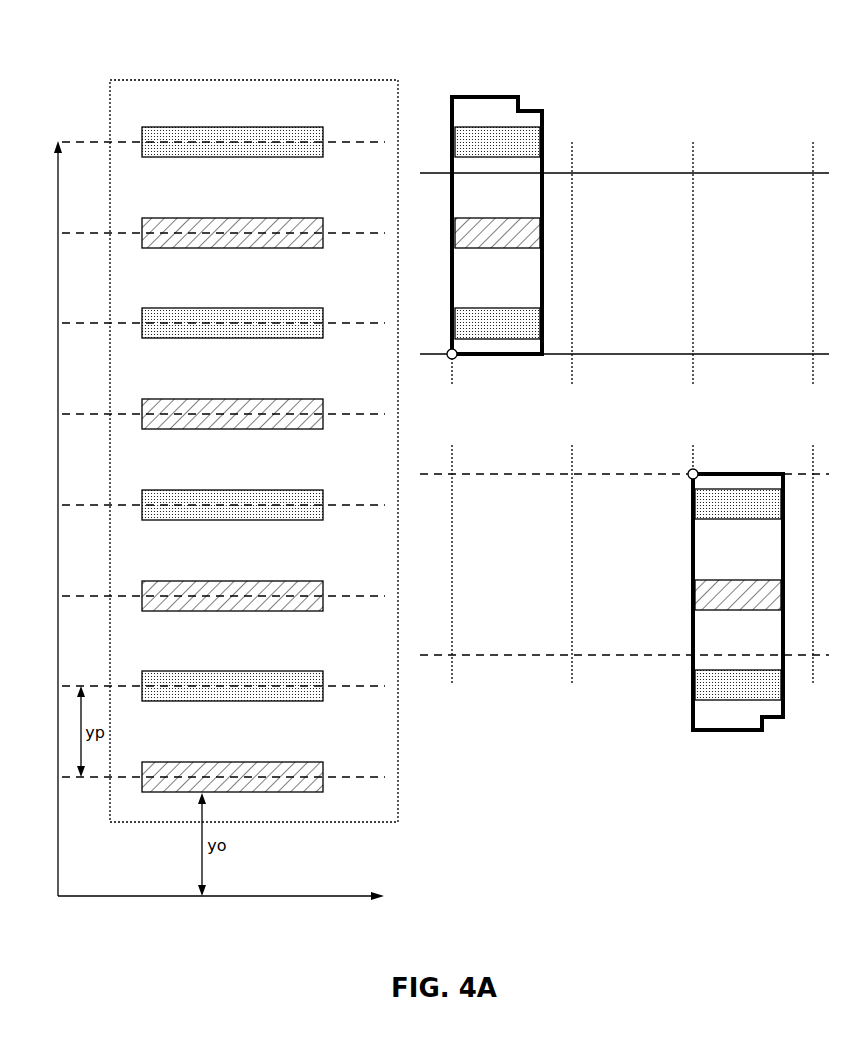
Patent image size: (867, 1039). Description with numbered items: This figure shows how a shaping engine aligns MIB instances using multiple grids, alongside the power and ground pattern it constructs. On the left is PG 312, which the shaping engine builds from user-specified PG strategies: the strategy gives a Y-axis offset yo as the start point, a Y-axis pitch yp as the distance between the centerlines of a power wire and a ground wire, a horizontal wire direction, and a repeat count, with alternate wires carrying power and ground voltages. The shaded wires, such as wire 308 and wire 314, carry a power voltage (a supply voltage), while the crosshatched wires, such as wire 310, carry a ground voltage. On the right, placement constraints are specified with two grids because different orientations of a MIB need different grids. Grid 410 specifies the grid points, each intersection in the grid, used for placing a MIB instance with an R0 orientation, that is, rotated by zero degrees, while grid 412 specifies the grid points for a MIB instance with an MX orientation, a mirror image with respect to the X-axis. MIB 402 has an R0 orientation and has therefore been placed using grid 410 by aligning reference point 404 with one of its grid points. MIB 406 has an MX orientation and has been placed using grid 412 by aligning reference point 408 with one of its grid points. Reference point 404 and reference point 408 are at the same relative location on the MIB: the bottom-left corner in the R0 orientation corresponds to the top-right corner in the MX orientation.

The PG 312 is at (148, 80).
The wire 308 is at (323, 490).
The wire 310 is at (323, 581).
The wire 314 is at (323, 671).
The MIB 402 is at (488, 95).
The reference point 404 is at (525, 392).
The MIB 406 is at (728, 735).
The reference point 408 is at (759, 431).
The grid 410 is at (694, 150).
The grid 412 is at (572, 665).